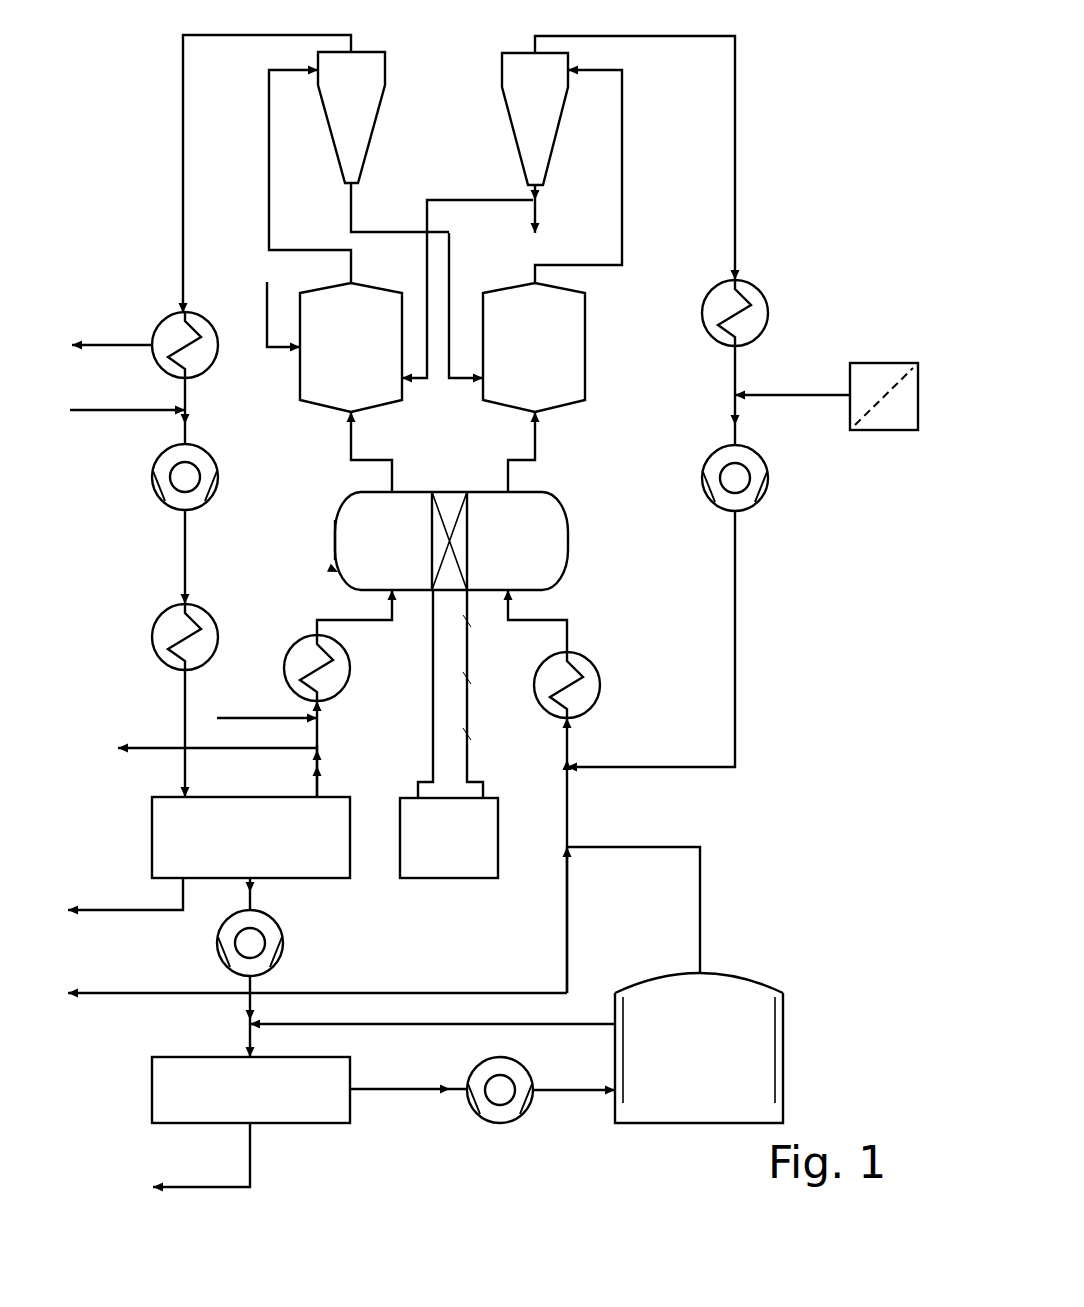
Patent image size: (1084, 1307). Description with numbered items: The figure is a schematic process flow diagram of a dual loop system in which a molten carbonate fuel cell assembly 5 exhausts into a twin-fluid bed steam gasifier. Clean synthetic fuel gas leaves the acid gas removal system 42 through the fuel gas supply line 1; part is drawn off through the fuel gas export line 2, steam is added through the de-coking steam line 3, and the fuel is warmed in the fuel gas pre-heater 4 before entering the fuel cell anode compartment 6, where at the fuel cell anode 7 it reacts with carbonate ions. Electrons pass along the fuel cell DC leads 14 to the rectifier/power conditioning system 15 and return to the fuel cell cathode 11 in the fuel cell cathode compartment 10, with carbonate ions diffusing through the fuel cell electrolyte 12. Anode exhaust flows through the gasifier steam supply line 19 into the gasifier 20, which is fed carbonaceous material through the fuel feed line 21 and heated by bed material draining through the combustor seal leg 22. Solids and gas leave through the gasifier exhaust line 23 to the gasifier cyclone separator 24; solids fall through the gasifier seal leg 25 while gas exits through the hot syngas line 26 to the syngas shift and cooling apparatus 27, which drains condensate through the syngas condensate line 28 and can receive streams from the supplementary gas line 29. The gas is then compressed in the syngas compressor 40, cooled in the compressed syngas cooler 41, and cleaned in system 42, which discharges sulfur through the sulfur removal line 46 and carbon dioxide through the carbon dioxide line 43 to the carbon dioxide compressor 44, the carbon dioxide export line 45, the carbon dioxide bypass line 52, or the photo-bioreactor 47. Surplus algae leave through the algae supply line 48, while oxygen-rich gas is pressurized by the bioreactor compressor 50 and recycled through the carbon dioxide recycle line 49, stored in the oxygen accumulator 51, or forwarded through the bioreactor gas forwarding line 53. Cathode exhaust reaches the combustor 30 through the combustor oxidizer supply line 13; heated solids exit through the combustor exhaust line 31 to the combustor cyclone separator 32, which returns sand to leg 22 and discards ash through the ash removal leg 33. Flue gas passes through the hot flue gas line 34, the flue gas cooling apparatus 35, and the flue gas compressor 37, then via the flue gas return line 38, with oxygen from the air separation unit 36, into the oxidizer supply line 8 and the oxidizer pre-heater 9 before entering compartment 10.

The fuel gas supply line 1 is at (320, 765).
The fuel gas export line 2 is at (165, 745).
The de-coking steam line 3 is at (280, 715).
The fuel gas pre-heater 4 is at (290, 645).
The molten carbonate fuel cell assembly 5 is at (335, 572).
The fuel cell anode compartment 6 is at (365, 520).
The fuel cell anode 7 is at (432, 525).
The oxidizer supply line 8 is at (570, 750).
The oxidizer pre-heater 9 is at (600, 685).
The fuel cell cathode compartment 10 is at (568, 542).
The fuel cell cathode 11 is at (470, 508).
The fuel cell electrolyte 12 is at (450, 490).
The combustor oxidizer supply line 13 is at (540, 437).
The fuel cell DC leads 14 is at (435, 653).
The rectifier/power conditioning system 15 is at (452, 880).
The gasifier steam supply line 19 is at (350, 440).
The gasifier 20 is at (300, 378).
The fuel feed line 21 is at (262, 305).
The combustor seal leg 22 is at (460, 197).
The gasifier exhaust line 23 is at (263, 210).
The gasifier cyclone separator 24 is at (388, 67).
The gasifier seal leg 25 is at (353, 212).
The hot syngas line 26 is at (183, 97).
The syngas shift and cooling apparatus 27 is at (160, 320).
The syngas condensate line 28 is at (125, 342).
The supplementary gas line 29 is at (118, 412).
The combustor 30 is at (587, 375).
The combustor exhaust line 31 is at (622, 250).
The combustor cyclone separator 32 is at (553, 152).
The ash removal leg 33 is at (537, 217).
The hot flue gas line 34 is at (737, 70).
The flue gas cooling apparatus 35 is at (770, 310).
The air separation unit 36 is at (883, 360).
The flue gas compressor 37 is at (768, 480).
The flue gas return line 38 is at (737, 590).
The syngas compressor 40 is at (150, 490).
The compressed syngas cooler 41 is at (150, 635).
The acid gas removal system 42 is at (147, 836).
The carbon dioxide line 43 is at (258, 894).
The carbon dioxide compressor 44 is at (285, 945).
The carbon dioxide export line 45 is at (133, 990).
The sulfur removal line 46 is at (125, 913).
The photo-bioreactor 47 is at (178, 1057).
The algae supply line 48 is at (245, 1170).
The carbon dioxide recycle line 49 is at (425, 1030).
The bioreactor compressor 50 is at (530, 1110).
The oxygen accumulator 51 is at (785, 1027).
The carbon dioxide bypass line 52 is at (568, 968).
The bioreactor gas forwarding line 53 is at (703, 892).